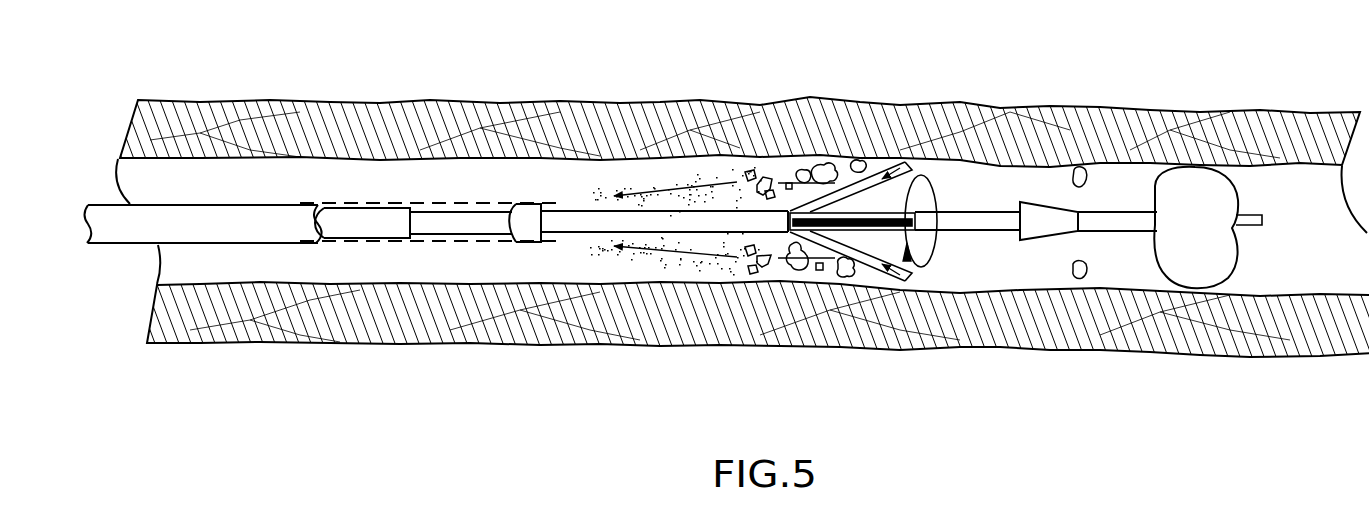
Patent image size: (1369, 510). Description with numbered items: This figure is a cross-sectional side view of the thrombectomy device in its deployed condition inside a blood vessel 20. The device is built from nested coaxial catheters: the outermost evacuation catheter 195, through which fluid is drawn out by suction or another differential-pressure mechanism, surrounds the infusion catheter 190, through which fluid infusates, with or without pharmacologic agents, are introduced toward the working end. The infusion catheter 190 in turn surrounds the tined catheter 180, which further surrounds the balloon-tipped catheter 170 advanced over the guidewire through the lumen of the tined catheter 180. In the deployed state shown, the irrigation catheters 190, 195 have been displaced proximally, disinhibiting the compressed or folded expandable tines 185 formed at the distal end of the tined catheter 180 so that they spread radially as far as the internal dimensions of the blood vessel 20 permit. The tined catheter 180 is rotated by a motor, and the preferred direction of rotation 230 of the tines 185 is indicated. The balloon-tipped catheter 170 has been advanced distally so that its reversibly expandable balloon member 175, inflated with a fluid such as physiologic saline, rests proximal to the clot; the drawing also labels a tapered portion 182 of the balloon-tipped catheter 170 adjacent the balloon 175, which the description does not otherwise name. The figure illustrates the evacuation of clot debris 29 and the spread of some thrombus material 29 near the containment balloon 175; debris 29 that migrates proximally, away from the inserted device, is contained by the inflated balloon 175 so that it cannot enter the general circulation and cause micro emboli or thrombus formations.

The blood vessel 20 is at (307, 125).
The clot debris 29 is at (762, 185).
The balloon-tipped catheter 170 is at (1120, 218).
The reversibly expandable balloon member 175 is at (1200, 200).
The tined catheter 180 is at (708, 220).
The nozzle 182 is at (1040, 208).
The expandable tines 185 is at (912, 160).
The infusion catheter 190 is at (402, 213).
The evacuation catheter 195 is at (232, 218).
The direction of rotation 230 is at (933, 250).